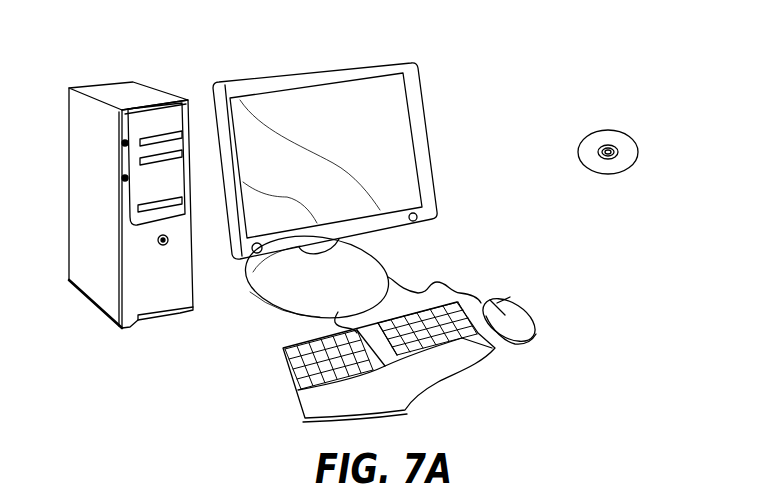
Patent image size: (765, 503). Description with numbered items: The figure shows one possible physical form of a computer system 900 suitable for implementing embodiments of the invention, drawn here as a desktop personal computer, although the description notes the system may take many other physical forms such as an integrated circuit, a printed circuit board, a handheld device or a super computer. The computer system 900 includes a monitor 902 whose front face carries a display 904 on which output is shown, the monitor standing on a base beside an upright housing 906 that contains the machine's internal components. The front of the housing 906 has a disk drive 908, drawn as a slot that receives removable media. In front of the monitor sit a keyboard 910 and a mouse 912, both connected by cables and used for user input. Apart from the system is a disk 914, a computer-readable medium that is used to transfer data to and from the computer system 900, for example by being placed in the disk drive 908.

The computer system 900 is at (541, 45).
The monitor 902 is at (428, 159).
The display 904 is at (387, 100).
The housing 906 is at (118, 92).
The disk drive 908 is at (175, 200).
The keyboard 910 is at (293, 388).
The mouse 912 is at (528, 315).
The disk 914 is at (620, 128).